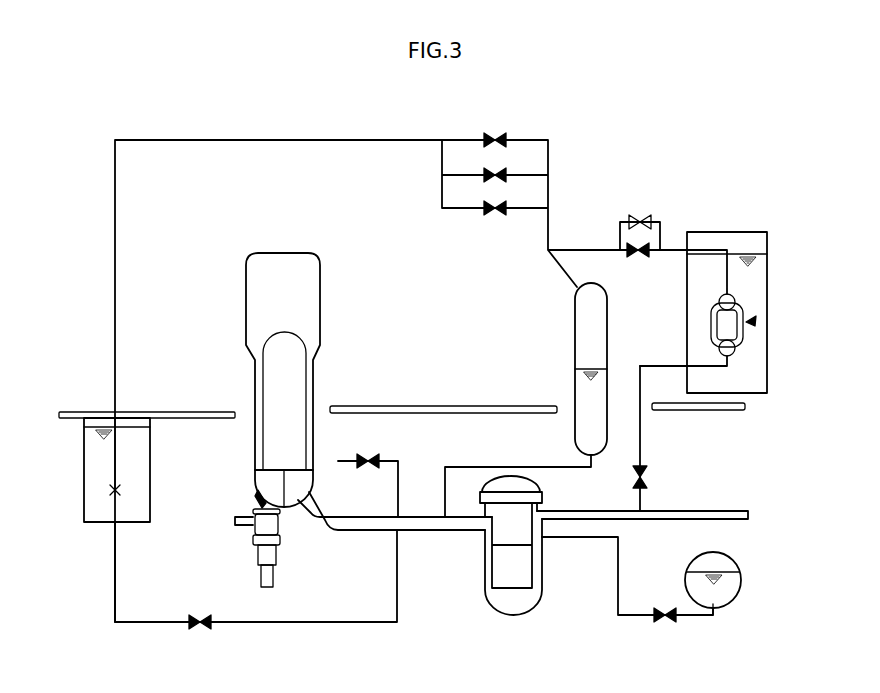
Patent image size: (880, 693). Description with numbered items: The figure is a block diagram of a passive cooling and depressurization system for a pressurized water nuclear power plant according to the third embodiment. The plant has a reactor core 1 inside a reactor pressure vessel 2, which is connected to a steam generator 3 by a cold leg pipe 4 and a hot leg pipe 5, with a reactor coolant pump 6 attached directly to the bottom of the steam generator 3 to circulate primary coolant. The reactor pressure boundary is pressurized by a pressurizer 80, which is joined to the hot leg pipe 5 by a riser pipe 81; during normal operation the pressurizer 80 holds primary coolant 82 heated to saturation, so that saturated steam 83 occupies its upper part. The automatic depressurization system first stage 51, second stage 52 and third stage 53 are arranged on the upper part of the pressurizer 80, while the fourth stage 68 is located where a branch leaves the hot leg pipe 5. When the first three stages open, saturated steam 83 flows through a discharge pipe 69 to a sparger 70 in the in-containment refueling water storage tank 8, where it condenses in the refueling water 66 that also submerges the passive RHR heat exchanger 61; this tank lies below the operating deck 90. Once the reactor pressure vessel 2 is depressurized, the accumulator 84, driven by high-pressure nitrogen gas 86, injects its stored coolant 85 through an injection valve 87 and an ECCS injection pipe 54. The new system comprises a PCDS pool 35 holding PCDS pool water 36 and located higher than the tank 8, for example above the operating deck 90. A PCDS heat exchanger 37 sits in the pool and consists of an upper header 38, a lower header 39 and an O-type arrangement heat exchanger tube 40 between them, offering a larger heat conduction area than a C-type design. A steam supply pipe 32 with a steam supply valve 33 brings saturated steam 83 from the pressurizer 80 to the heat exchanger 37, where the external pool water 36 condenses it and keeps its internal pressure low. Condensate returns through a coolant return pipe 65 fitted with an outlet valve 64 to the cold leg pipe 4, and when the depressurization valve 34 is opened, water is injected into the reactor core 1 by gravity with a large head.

The reactor core 1 is at (511, 580).
The reactor pressure vessel 2 is at (486, 605).
The steam generator 3 is at (320, 300).
The cold leg pipe 4 is at (668, 514).
The hot leg pipe 5 is at (372, 540).
The reactor coolant pump 6 is at (283, 530).
The in-containment refueling water storage tank 8 is at (82, 445).
The steam supply pipe 32 is at (588, 248).
The steam supply valve 33 is at (640, 218).
The depressurization valve 34 is at (640, 258).
The PCDS pool 35 is at (767, 242).
The PCDS pool water 36 is at (758, 270).
The PCDS heat exchanger 37 is at (757, 322).
The upper header 38 is at (736, 300).
The lower header 39 is at (736, 353).
The O-type arrangement heat exchanger tube 40 is at (710, 326).
The automatic depressurization system first stage 51 is at (505, 133).
The automatic depressurization system second stage 52 is at (505, 170).
The automatic depressurization system third stage 53 is at (505, 204).
The ECCS injection pipe 54 is at (617, 586).
The passive RHR heat exchanger 61 is at (138, 458).
The outlet valve 64 is at (650, 476).
The coolant return pipe 65 is at (645, 432).
The refueling water 66 is at (106, 510).
The automatic depressurization system fourth stage 68 is at (355, 452).
The discharge pipe 69 is at (225, 140).
The sparger 70 is at (108, 490).
The pressurizer 80 is at (575, 343).
The riser pipe 81 is at (465, 462).
The primary coolant 82 is at (584, 385).
The saturated steam 83 is at (578, 315).
The accumulator 84 is at (742, 580).
The coolant 85 is at (720, 598).
The nitrogen gas 86 is at (715, 556).
The injection valve 87 is at (668, 623).
The operating deck 90 is at (355, 406).